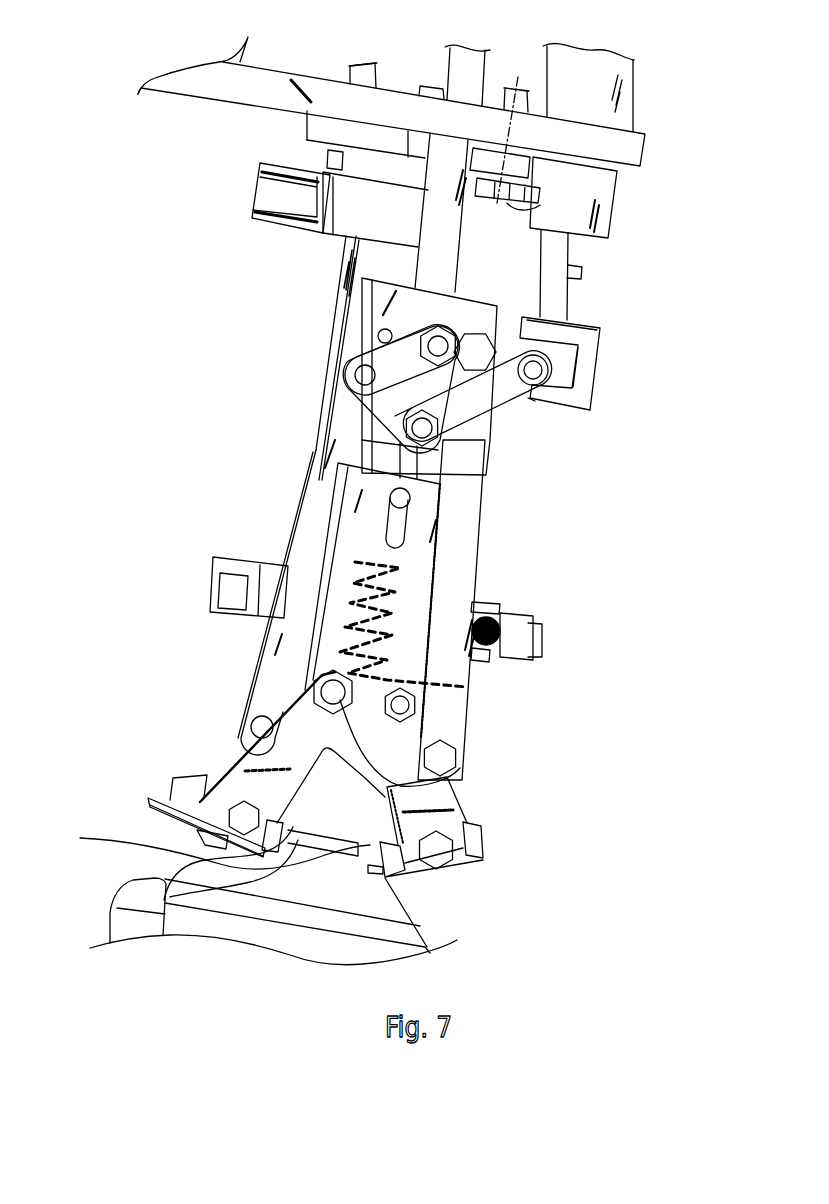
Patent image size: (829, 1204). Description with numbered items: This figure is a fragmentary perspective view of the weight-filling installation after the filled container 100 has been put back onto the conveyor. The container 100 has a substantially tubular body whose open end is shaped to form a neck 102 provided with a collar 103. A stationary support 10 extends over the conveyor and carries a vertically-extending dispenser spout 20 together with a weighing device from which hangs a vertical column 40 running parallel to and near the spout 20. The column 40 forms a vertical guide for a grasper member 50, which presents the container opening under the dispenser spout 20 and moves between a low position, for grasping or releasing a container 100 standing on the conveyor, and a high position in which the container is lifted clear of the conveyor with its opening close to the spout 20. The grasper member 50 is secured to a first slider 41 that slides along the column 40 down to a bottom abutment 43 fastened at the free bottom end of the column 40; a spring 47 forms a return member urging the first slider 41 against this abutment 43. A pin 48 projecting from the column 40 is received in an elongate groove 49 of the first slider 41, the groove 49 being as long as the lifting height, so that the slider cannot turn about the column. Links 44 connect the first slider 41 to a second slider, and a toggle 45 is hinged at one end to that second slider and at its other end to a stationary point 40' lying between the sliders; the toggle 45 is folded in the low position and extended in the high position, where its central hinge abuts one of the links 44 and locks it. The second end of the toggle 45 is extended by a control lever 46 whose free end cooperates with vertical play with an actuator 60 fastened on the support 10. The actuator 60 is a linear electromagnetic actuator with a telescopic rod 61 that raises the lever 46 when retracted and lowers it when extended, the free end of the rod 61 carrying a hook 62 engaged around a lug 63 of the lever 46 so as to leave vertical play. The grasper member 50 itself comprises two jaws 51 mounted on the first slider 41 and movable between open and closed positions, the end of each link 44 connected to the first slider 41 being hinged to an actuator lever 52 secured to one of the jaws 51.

The support 10 is at (640, 147).
The dispenser spout 20 is at (346, 272).
The vertical column 40 is at (326, 189).
The stationary point 40' is at (493, 382).
The first slider 41 is at (333, 515).
The bottom abutment 43 is at (363, 430).
The links 44 is at (304, 553).
The toggle 45 is at (345, 358).
The control lever 46 is at (480, 418).
The spring 47 is at (466, 686).
The pin 48 is at (400, 499).
The elongate groove 49 is at (402, 533).
The grasper member 50 is at (218, 738).
The jaws 51 is at (223, 800).
The actuator lever 52 is at (380, 777).
The actuator 60 is at (630, 75).
The telescopic rod 61 is at (570, 260).
The hook 62 is at (597, 370).
The lug 63 is at (541, 382).
The container 100 is at (417, 930).
The neck 102 is at (80, 838).
The collar 103 is at (125, 884).